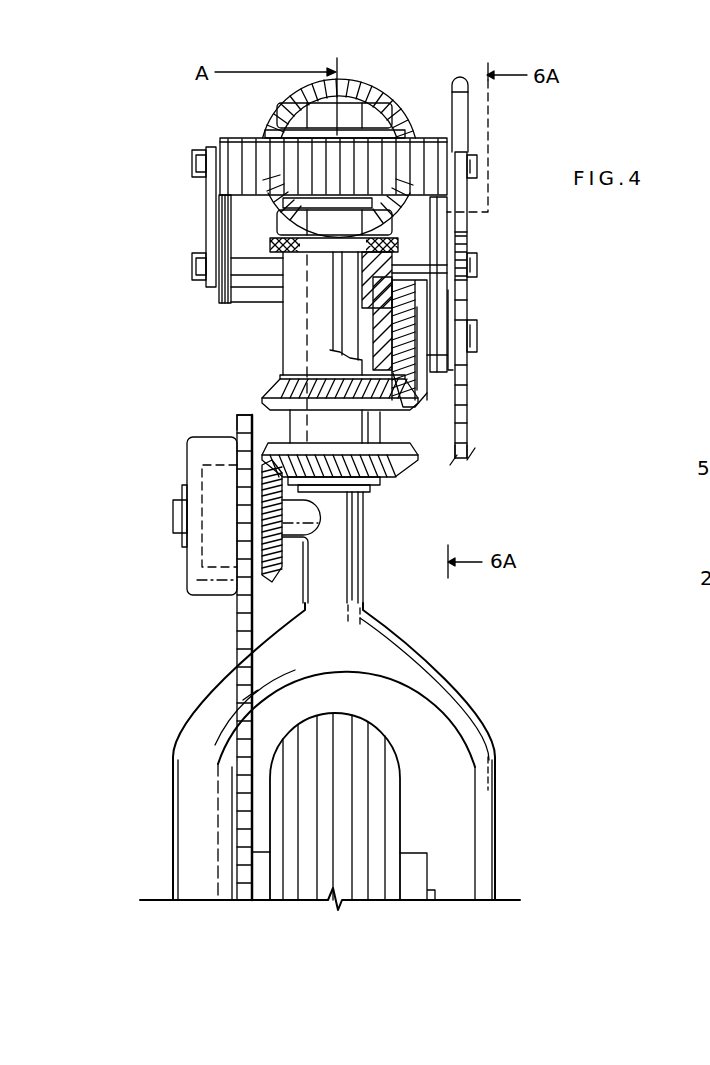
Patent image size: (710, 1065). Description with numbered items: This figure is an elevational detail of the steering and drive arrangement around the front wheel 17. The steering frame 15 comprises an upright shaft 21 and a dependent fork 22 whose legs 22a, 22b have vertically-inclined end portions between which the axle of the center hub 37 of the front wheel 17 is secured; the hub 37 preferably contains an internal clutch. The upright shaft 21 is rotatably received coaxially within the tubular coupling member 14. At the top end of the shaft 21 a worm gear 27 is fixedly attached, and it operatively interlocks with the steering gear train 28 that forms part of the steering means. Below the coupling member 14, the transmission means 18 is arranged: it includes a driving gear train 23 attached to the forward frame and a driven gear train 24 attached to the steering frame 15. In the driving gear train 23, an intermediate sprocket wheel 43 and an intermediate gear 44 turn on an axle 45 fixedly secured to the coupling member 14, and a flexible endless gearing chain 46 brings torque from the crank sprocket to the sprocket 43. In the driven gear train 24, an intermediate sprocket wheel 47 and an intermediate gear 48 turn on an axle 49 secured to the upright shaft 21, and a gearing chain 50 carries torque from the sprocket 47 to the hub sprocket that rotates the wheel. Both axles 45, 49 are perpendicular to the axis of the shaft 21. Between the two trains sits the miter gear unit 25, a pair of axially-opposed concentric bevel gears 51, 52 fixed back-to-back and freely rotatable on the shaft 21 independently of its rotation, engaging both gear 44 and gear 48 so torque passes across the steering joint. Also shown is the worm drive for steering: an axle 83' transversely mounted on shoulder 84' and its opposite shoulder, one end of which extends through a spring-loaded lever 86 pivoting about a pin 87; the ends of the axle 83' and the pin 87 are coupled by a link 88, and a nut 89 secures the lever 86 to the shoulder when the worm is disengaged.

The coupling member 14 is at (295, 335).
The steering frame 15 is at (380, 598).
The front wheel 17 is at (380, 778).
The transmission means 18 is at (233, 402).
The upright shaft 21 is at (340, 567).
The fork 22 is at (494, 700).
The leg 22a is at (482, 808).
The leg 22b is at (193, 812).
The driving gear train 23 is at (482, 441).
The driven gear train 24 is at (229, 616).
The miter gear unit 25 is at (410, 480).
The worm gear 27 is at (247, 157).
The steering gear train 28 is at (229, 112).
The center hub 37 is at (413, 873).
The intermediate sprocket wheel 43 is at (472, 375).
The intermediate gear 44 is at (407, 320).
The axle 45 is at (477, 335).
The gearing chain 46 is at (462, 413).
The intermediate sprocket wheel 47 is at (232, 422).
The intermediate gear 48 is at (287, 550).
The axle 49 is at (173, 512).
The gearing chain 50 is at (243, 677).
The bevel gear 51 is at (279, 393).
The bevel gear 52 is at (413, 467).
The axle 83' is at (147, 170).
The shoulder 84' is at (171, 275).
The lever 86 is at (462, 135).
The pin 87 is at (258, 270).
The link 88 is at (207, 222).
The nut 89 is at (472, 253).